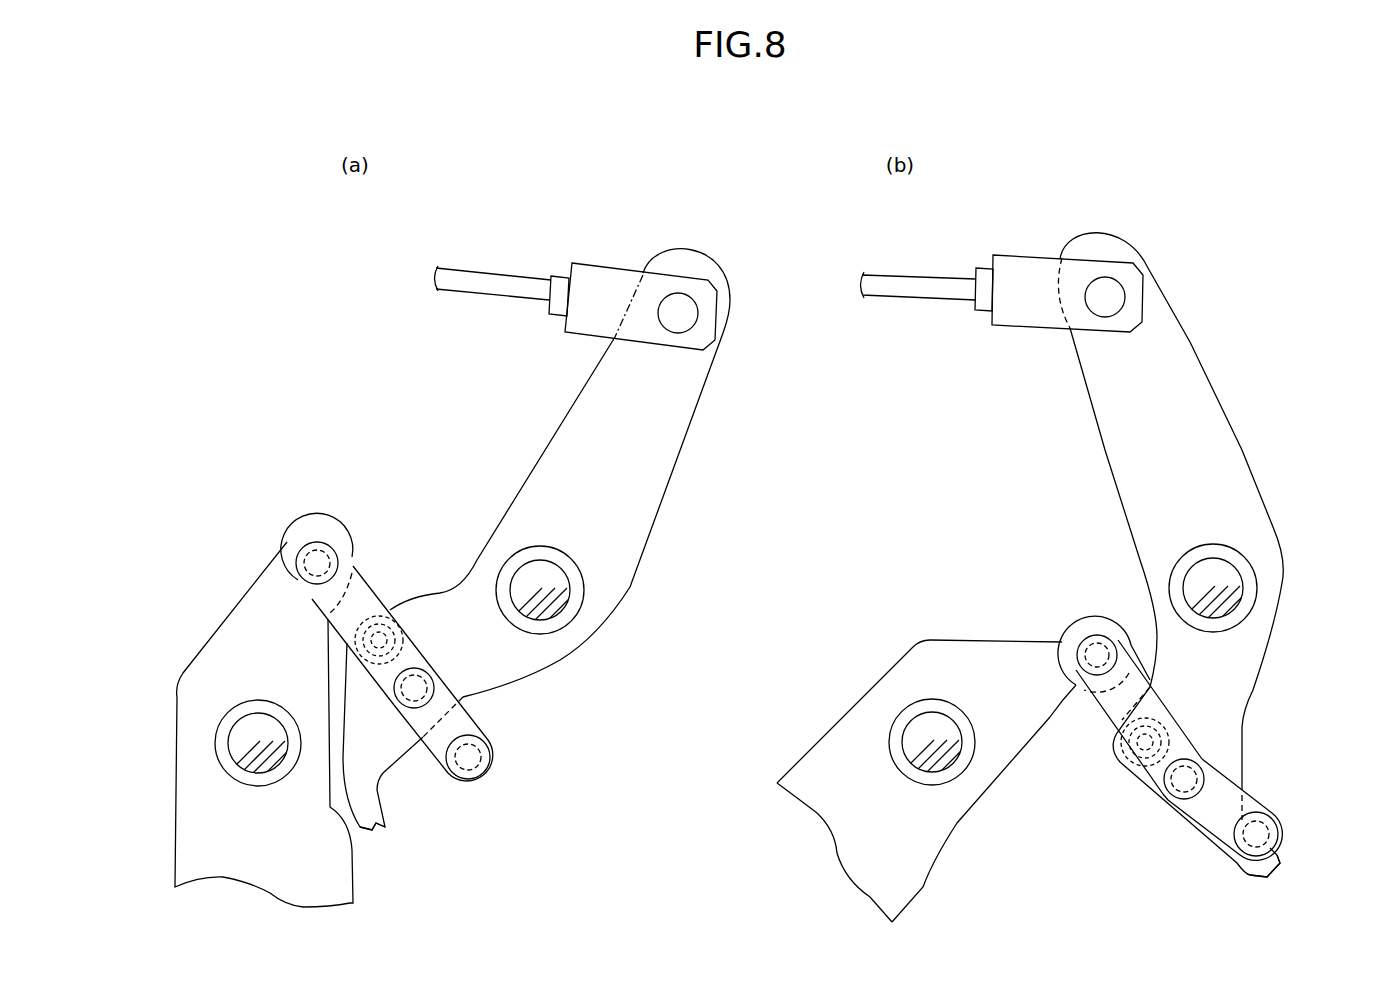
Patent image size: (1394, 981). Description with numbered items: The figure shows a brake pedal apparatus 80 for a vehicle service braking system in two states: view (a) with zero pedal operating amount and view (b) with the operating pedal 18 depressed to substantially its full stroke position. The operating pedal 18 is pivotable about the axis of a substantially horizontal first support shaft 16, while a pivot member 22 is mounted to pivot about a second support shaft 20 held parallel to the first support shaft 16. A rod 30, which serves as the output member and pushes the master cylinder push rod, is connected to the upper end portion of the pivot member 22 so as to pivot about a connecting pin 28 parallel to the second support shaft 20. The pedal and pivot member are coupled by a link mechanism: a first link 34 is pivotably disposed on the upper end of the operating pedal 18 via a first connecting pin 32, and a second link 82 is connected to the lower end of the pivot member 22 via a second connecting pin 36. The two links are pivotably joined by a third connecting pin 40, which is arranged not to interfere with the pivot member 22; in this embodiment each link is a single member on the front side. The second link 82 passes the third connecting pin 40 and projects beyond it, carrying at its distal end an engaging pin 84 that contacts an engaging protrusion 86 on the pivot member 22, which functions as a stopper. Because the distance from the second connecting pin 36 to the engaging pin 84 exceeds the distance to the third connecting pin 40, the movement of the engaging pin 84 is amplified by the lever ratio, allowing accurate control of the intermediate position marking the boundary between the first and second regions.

The first support shaft 16 is at (248, 733).
The operating pedal 18 is at (338, 887).
The second support shaft 20 is at (553, 605).
The pivot member 22 is at (632, 538).
The connecting pin 28 is at (683, 318).
The rod 30 is at (472, 282).
The first connecting pin 32 is at (318, 563).
The first link 34 is at (363, 595).
The second connecting pin 36 is at (400, 620).
The third connecting pin 40 is at (413, 690).
The brake pedal apparatus 80 is at (342, 306).
The second link 82 is at (457, 697).
The engaging pin 84 is at (470, 762).
The engaging protrusion 86 is at (382, 832).